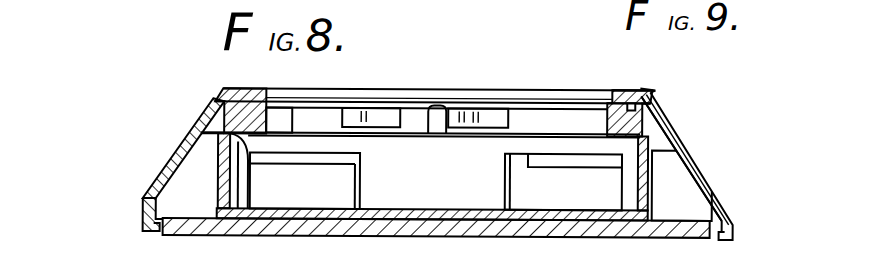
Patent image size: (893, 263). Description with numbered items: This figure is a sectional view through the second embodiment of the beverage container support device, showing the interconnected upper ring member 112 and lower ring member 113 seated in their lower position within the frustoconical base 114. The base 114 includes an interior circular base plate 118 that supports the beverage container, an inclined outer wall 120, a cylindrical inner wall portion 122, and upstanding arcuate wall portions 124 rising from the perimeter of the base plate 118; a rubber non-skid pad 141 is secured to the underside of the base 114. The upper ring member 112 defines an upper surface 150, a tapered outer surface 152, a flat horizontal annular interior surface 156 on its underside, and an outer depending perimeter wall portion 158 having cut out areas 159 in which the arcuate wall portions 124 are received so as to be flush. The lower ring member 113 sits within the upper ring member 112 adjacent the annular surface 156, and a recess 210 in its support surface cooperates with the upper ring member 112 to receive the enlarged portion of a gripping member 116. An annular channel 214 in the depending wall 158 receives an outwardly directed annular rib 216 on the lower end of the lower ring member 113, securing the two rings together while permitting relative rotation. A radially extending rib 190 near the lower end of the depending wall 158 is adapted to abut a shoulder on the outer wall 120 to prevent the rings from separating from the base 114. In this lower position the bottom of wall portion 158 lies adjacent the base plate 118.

The upper ring member 112 is at (237, 86).
The lower ring member 113 is at (268, 122).
The frustoconical base 114 is at (703, 162).
The gripping members 116 is at (387, 110).
The base plate 118 is at (407, 210).
The inclined outer wall 120 is at (697, 137).
The cylindrical inner wall portion 122 is at (222, 117).
The arcuate wall portions 124 is at (297, 153).
The non-skid pad 141 is at (665, 233).
The upper surface 150 is at (636, 96).
The tapered outer surface 152 is at (655, 97).
The flat horizontal annular interior surface 156 is at (634, 106).
The outer depending perimeter wall portion 158 is at (220, 173).
The cut out areas 159 is at (226, 124).
The radially extending rib 190 is at (646, 212).
The recess 210 is at (403, 130).
The annular channel 214 is at (214, 127).
The annular rib 216 is at (236, 140).